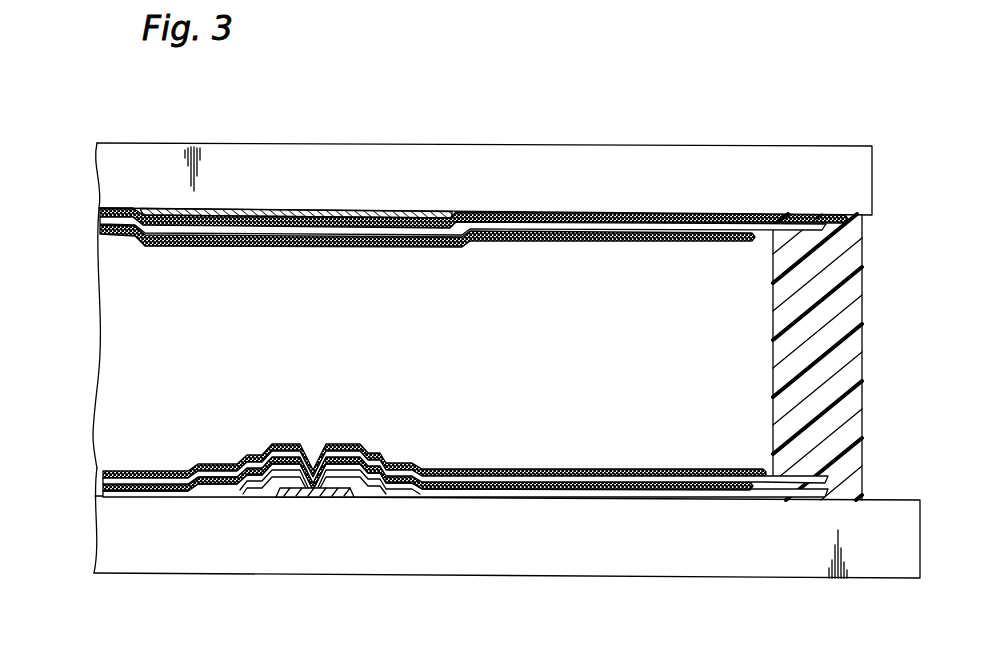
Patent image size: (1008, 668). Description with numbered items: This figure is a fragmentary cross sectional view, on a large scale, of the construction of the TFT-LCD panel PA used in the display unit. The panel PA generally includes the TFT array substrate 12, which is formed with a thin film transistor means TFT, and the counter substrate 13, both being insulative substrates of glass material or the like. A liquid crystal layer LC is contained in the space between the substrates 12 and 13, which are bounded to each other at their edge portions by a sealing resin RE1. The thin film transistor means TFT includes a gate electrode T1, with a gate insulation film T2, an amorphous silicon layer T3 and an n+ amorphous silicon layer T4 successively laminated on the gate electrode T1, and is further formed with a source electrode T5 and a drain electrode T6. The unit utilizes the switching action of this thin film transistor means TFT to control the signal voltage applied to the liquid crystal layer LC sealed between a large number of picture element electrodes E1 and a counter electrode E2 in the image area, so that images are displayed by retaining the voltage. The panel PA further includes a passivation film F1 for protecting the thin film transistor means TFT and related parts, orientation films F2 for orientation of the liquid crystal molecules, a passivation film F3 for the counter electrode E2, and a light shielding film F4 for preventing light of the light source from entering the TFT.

The counter substrate 13 is at (403, 170).
The TFT array substrate 12 is at (582, 548).
The liquid crystal layer LC is at (175, 313).
The sealing resin RE1 is at (837, 328).
The TFT-LCD panel PA is at (750, 122).
The counter electrode E2 is at (548, 210).
The picture element electrodes E1 is at (573, 478).
The light shielding film F4 is at (267, 205).
The passivation film F3 is at (517, 226).
The orientation films F2 is at (653, 240).
The passivation film F1 is at (490, 476).
The thin film transistor means TFT is at (220, 507).
The gate electrode T1 is at (315, 497).
The gate insulation film T2 is at (228, 497).
The amorphous silicon layer T3 is at (322, 440).
The n+ amorphous silicon layer T4 is at (340, 458).
The source electrode T5 is at (207, 462).
The drain electrode T6 is at (385, 460).